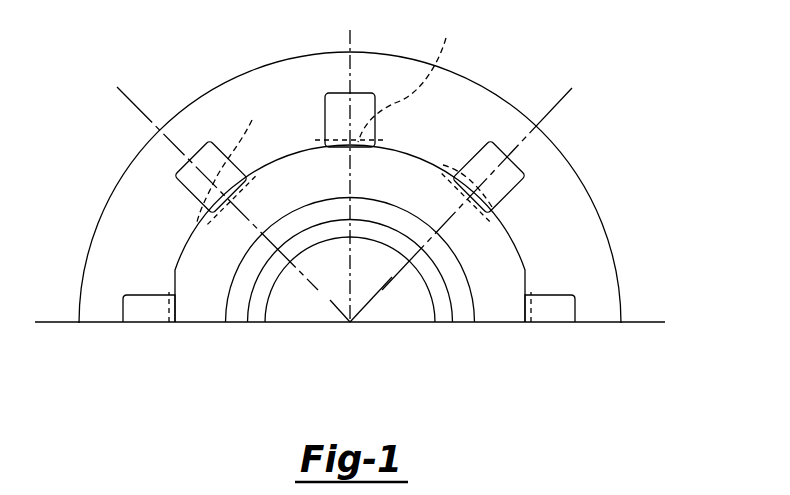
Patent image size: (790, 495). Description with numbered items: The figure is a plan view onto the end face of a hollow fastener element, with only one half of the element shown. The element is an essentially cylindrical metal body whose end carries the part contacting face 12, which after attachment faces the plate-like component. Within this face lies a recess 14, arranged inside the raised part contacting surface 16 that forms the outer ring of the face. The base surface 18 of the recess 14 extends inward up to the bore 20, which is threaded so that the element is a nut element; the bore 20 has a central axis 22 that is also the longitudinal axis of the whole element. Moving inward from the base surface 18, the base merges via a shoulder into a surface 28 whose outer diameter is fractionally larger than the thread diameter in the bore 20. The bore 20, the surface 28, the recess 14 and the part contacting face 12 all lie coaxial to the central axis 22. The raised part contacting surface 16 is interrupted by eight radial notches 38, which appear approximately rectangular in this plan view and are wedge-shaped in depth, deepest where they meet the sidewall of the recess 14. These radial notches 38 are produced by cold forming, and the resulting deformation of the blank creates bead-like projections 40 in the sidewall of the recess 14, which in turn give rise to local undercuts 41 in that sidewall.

The part contacting face 12 is at (125, 265).
The recess 14 is at (198, 315).
The raised part contacting surface 16 is at (463, 117).
The base surface 18 is at (495, 300).
The bore 20 is at (278, 287).
The central axis 22 is at (352, 322).
The surface 28 is at (328, 234).
The radial notches 38 is at (333, 98).
The bead-like projections 40 is at (223, 208).
The local undercuts 41 is at (344, 113).